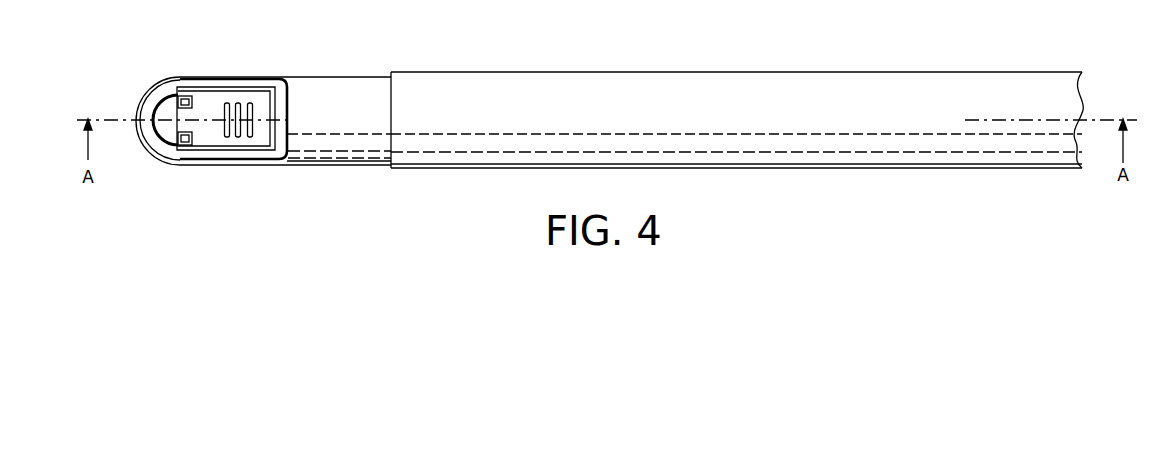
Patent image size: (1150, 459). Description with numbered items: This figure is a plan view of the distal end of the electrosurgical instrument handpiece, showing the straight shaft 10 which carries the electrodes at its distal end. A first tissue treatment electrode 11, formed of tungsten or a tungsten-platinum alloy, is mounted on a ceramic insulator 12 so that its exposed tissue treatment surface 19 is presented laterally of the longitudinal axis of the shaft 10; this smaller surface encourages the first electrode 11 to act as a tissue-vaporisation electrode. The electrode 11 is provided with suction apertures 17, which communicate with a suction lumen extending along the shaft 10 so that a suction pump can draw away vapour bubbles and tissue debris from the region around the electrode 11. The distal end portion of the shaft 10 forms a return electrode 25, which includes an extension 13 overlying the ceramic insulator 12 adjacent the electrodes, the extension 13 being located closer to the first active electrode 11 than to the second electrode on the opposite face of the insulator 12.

The shaft 10 is at (725, 177).
The return electrode 25 is at (342, 86).
The ceramic insulator 12 is at (162, 87).
The extension 13 is at (245, 78).
The first tissue treatment electrode 11 is at (158, 149).
The tissue treatment surface 19 is at (210, 137).
The suction apertures 17 is at (238, 137).